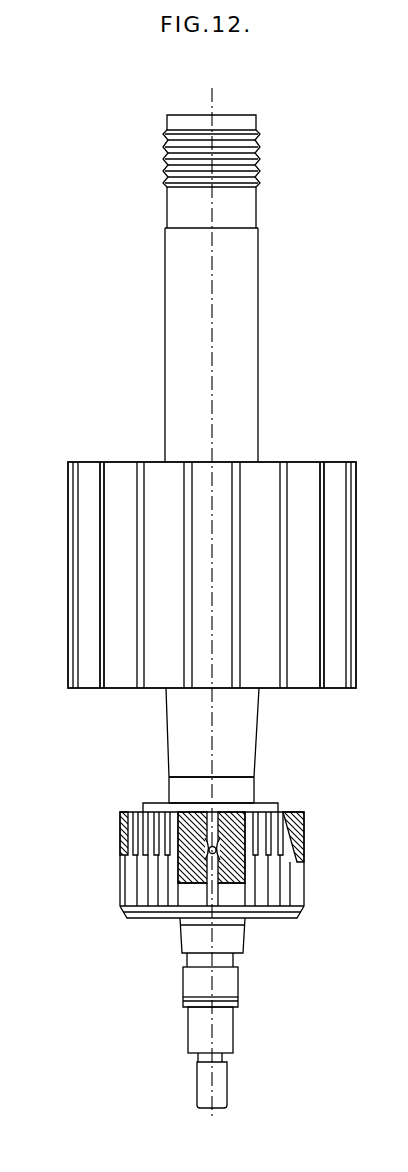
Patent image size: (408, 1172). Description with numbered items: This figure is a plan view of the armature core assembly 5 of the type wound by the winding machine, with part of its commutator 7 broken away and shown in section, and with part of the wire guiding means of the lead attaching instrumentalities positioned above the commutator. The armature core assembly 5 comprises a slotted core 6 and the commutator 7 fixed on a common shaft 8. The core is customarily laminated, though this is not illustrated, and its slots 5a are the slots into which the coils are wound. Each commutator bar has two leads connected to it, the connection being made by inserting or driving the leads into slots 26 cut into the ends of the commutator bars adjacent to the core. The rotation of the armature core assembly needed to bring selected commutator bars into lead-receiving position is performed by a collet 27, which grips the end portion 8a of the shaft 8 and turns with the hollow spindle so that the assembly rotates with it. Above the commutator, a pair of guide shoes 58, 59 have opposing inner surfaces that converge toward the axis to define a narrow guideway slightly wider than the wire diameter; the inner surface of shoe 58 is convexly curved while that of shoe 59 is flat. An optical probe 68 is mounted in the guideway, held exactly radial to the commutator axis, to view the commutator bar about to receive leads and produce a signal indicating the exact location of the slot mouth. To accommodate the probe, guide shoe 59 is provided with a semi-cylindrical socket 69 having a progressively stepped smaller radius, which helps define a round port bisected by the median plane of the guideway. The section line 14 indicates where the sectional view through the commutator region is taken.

The armature core assembly 5 is at (331, 759).
The slots 5a is at (345, 646).
The slotted core 6 is at (335, 569).
The commutator 7 is at (120, 857).
The shaft 8 is at (245, 374).
The end portion of the shaft 8a is at (200, 1084).
The section line 14- 14 is at (122, 919).
The slots 26 is at (145, 817).
The collet 27 is at (213, 830).
The guide shoe 58 is at (188, 812).
The guide shoe 59 is at (235, 808).
The optical probe 68 is at (180, 880).
The semi-cylindrical socket 69 is at (222, 880).